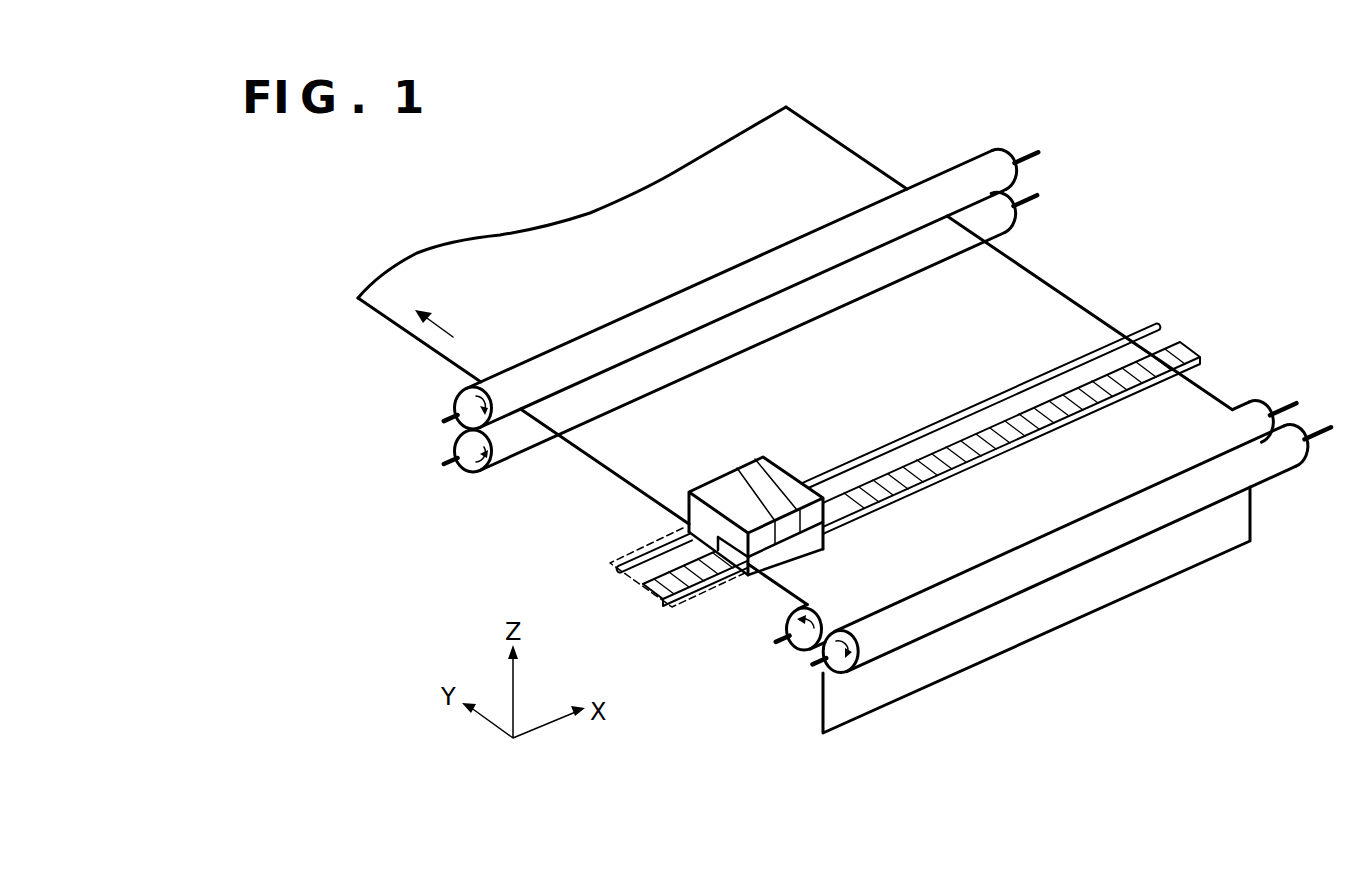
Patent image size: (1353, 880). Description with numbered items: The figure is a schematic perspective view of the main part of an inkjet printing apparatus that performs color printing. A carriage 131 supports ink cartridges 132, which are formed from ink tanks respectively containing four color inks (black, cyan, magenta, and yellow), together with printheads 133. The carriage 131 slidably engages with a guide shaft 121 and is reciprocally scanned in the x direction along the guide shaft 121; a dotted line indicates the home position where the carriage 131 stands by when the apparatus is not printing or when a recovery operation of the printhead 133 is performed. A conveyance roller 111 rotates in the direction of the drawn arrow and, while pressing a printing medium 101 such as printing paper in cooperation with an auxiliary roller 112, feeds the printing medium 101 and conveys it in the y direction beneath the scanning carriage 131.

The printing medium 101 is at (822, 142).
The conveyance roller 111 is at (985, 158).
The auxiliary roller 112 is at (1005, 228).
The guide shaft 121 is at (692, 600).
The carriage 131 is at (773, 562).
The ink cartridges 132 is at (737, 480).
The printheads 133 is at (700, 540).